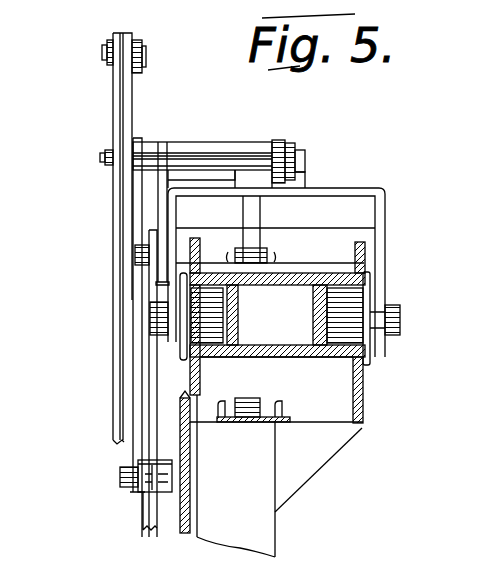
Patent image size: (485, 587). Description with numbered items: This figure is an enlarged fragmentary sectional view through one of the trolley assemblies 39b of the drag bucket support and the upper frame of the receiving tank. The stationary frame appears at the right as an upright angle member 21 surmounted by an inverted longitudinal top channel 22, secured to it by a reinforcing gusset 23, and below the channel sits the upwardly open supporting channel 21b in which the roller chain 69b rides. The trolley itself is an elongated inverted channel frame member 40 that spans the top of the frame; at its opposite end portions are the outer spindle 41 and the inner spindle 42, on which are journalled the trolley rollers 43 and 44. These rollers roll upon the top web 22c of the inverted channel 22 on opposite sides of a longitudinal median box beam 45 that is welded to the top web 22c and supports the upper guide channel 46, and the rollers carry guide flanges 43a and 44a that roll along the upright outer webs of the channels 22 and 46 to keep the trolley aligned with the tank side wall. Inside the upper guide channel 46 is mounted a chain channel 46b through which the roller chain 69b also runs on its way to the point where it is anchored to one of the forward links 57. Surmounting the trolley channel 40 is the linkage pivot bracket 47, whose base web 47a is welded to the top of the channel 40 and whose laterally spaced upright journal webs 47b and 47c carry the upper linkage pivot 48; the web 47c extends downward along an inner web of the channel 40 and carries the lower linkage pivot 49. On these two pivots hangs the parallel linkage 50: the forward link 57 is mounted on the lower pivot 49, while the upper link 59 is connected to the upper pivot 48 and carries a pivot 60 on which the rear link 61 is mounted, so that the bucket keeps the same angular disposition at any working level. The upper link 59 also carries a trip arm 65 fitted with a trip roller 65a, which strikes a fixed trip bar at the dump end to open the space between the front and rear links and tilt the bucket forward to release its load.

The upright angle member 21 is at (258, 540).
The supporting channel 21b is at (284, 416).
The inverted longitudinal top channel 22 is at (363, 398).
The top web 22c is at (293, 357).
The reinforcing gusset 23 is at (293, 482).
The trolley assembly 39b is at (406, 175).
The inverted channel frame member 40 is at (385, 207).
The outer spindle 41 is at (392, 318).
The inner spindle 42 is at (150, 312).
The trolley roller 43 is at (335, 323).
The guide flange 43a is at (370, 356).
The trolley roller 44 is at (215, 315).
The guide flange 44a is at (183, 350).
The longitudinal median box beam 45 is at (260, 358).
The upper guide channel 46 is at (334, 272).
The chain channel 46b is at (223, 262).
The linkage pivot bracket 47 is at (226, 134).
The base web 47a is at (300, 195).
The upright journal web 47b is at (283, 140).
The upright journal web 47c is at (165, 140).
The upper linkage pivot 48 is at (105, 157).
The lower linkage pivot 49 is at (135, 252).
The parallel linkage 50 is at (100, 414).
The forward link 57 is at (147, 518).
The upper link 59 is at (121, 92).
The pivot 60 is at (147, 54).
The rear link 61 is at (118, 195).
The trip arm 65 is at (138, 450).
The trip roller 65a is at (153, 480).
The roller chain 69b is at (295, 262).